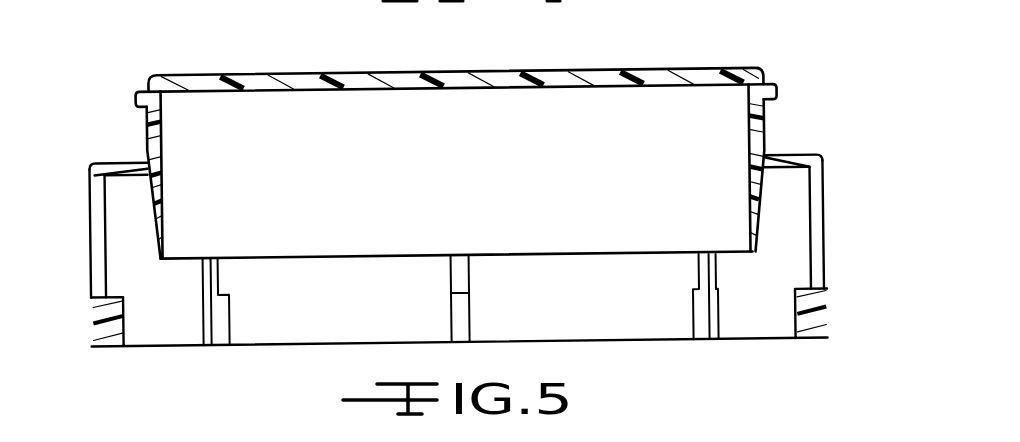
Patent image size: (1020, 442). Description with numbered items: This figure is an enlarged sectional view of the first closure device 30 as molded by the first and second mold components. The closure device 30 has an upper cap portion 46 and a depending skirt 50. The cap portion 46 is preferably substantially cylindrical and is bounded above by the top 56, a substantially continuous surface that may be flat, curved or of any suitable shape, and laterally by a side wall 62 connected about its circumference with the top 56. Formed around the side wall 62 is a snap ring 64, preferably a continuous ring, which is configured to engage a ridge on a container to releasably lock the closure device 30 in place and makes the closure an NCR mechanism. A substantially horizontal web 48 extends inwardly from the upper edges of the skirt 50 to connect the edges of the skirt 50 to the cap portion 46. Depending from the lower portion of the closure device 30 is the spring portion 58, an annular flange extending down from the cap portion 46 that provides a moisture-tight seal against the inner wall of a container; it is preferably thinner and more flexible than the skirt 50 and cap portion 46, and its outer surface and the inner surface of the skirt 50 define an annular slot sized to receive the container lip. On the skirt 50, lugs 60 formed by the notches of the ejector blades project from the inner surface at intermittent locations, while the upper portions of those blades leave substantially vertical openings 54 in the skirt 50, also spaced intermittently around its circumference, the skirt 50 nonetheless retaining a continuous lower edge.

The first closure device 30 is at (462, 213).
The cap portion 46 is at (456, 57).
The top 56 is at (458, 80).
The snap ring 64 is at (140, 100).
The side wall 62 is at (152, 135).
The spring portion 58 is at (167, 218).
The web 48 is at (126, 163).
The skirt 50 is at (461, 201).
The openings 54 is at (818, 218).
The lug 60 is at (108, 334).